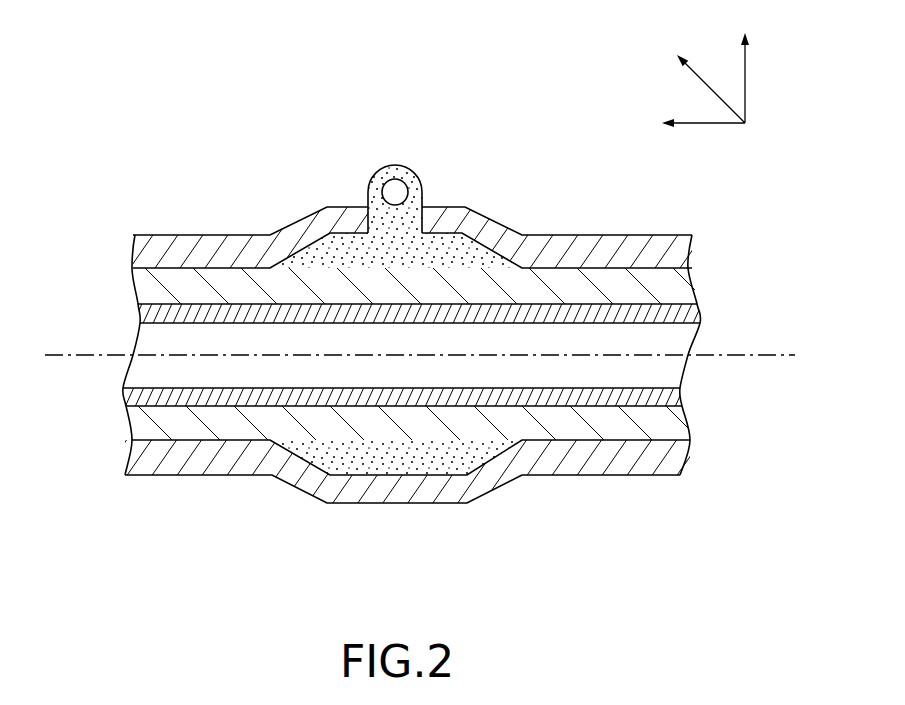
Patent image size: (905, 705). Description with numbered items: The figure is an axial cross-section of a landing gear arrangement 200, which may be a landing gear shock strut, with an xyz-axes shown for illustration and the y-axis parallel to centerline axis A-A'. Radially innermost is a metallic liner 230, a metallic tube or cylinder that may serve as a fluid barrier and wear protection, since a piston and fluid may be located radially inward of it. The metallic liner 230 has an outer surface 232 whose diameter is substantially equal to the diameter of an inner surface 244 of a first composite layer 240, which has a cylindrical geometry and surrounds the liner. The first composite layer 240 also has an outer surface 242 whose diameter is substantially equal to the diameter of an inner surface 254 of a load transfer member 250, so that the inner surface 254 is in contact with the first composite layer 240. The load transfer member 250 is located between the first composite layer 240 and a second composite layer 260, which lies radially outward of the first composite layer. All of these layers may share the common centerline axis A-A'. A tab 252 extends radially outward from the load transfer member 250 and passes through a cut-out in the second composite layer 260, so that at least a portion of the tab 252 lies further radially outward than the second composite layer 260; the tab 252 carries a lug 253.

The landing gear arrangement 200 is at (185, 128).
The metallic liner 230 is at (124, 398).
The outer surface 232 is at (352, 297).
The first composite layer 240 is at (192, 427).
The outer surface 242 is at (445, 268).
The inner surface 244 is at (437, 307).
The load transfer member 250 is at (455, 462).
The tab 252 is at (412, 168).
The lug 253 is at (369, 205).
The inner surface 254 is at (482, 270).
The second composite layer 260 is at (610, 462).